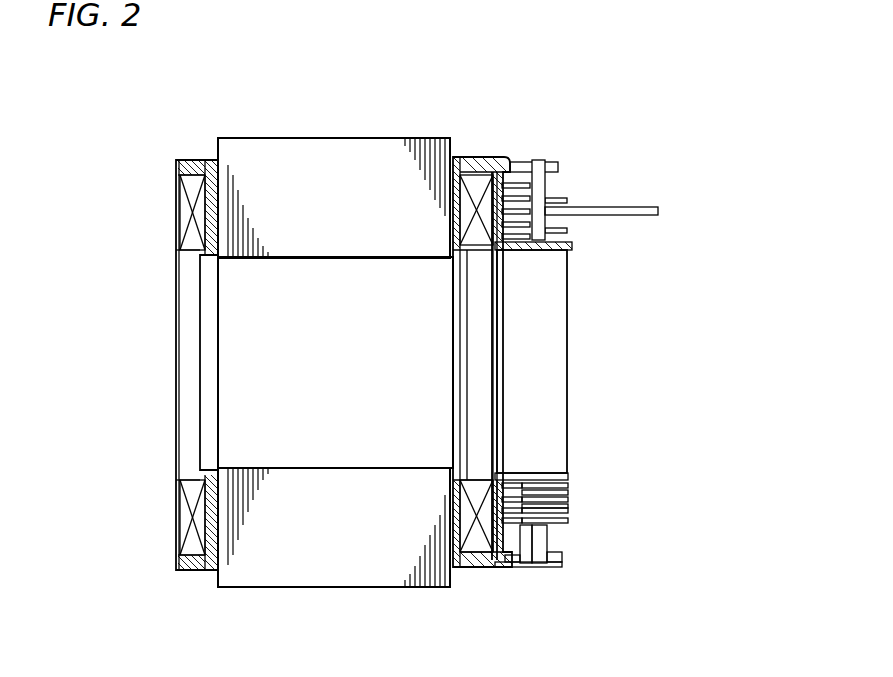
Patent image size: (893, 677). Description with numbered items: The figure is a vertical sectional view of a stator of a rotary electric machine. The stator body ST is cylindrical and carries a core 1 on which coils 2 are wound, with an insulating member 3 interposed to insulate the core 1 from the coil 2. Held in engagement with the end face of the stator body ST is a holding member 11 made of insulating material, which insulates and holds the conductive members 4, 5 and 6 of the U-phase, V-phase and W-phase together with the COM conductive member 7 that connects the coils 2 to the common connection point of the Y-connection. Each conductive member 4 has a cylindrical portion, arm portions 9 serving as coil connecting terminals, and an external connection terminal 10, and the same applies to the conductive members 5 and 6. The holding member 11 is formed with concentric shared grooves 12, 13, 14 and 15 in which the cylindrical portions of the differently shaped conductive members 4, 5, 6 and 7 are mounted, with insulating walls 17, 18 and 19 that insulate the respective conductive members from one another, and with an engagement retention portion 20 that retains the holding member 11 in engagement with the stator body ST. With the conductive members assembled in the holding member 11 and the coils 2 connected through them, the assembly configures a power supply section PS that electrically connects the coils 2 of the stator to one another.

The stator body ST is at (335, 323).
The core 1 is at (353, 138).
The coil 2 is at (199, 178).
The insulating member 3 is at (183, 162).
The conductive member 4 is at (475, 553).
The conductive member 5 is at (490, 512).
The conductive member 6 is at (504, 512).
The COM conductive member 7 is at (525, 560).
The arm portion 9 is at (538, 163).
The external connection terminal 10 is at (650, 207).
The holding member 11 is at (568, 403).
The shared groove 12 is at (546, 530).
The shared groove 13 is at (567, 514).
The shared groove 14 is at (565, 499).
The shared groove 15 is at (564, 488).
The insulating wall 17 is at (568, 522).
The insulating wall 18 is at (568, 507).
The insulating wall 19 is at (564, 493).
The engagement retention portion 20 is at (516, 562).
The power supply section PS is at (553, 184).